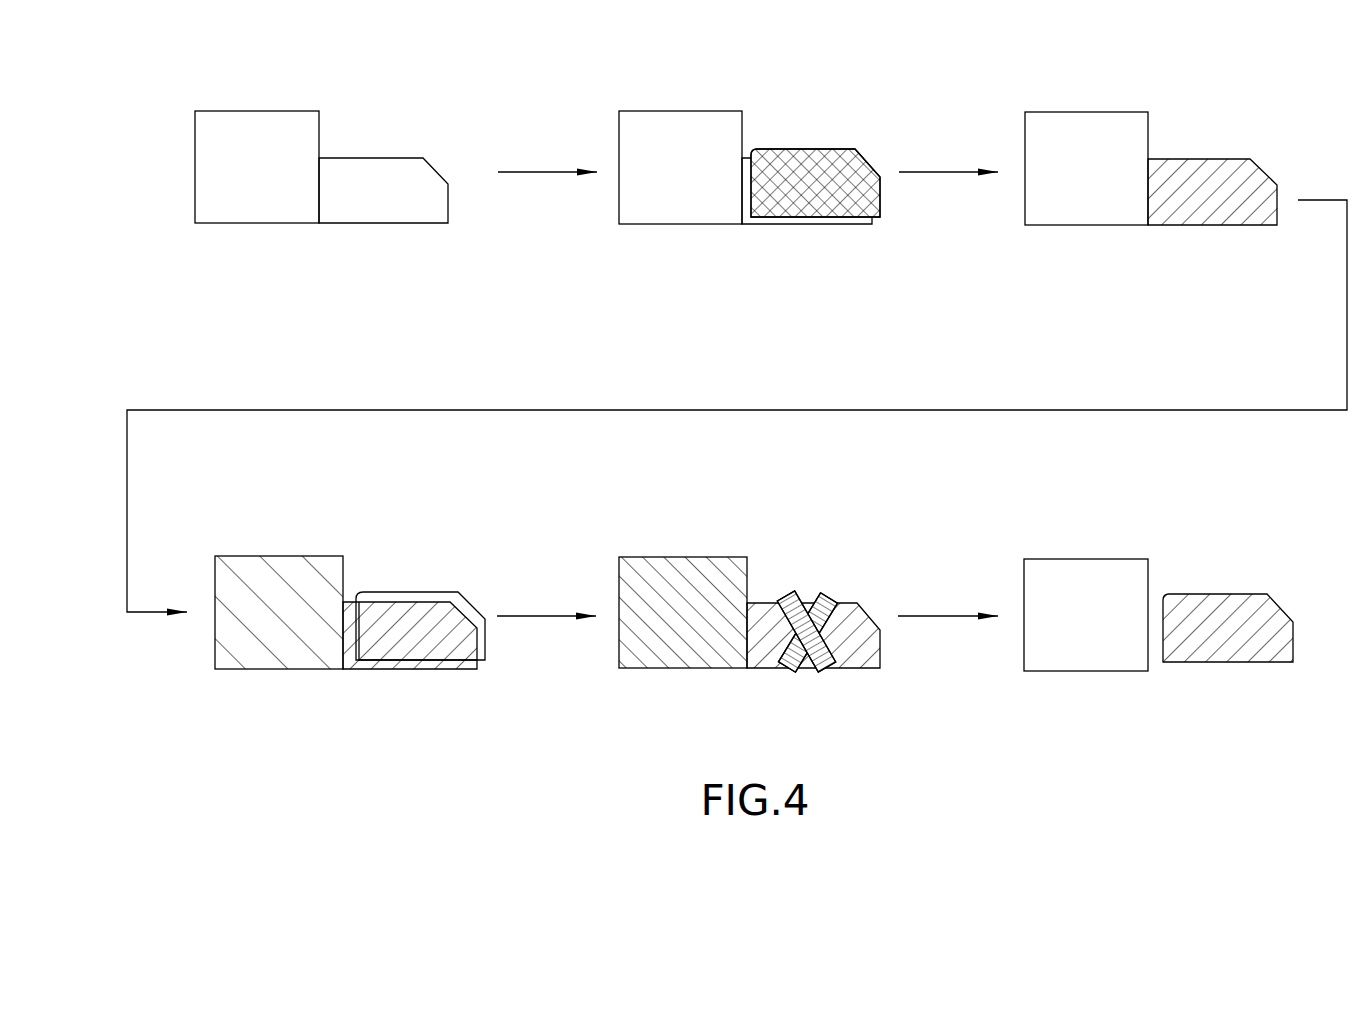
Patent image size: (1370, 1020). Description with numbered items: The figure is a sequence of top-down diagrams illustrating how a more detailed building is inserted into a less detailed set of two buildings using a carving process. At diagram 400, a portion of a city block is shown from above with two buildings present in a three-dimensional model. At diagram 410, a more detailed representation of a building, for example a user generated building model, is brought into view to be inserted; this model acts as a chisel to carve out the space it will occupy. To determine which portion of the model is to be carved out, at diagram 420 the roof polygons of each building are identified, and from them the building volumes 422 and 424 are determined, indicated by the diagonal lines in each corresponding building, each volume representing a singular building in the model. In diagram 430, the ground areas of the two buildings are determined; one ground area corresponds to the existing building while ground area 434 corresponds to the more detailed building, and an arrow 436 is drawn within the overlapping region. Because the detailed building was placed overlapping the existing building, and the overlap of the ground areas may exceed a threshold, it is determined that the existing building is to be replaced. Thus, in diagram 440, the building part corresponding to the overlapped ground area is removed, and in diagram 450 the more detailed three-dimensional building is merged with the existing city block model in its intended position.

The diagram 400 is at (289, 191).
The diagram 410 is at (764, 165).
The diagram 420 is at (1158, 162).
The building volume 422 is at (1087, 112).
The building volume 424 is at (1205, 227).
The diagram 430 is at (368, 607).
The ground area 434 is at (412, 591).
The direction of removal / interior 436 is at (444, 640).
The diagram 440 is at (764, 641).
The diagram 450 is at (1158, 604).